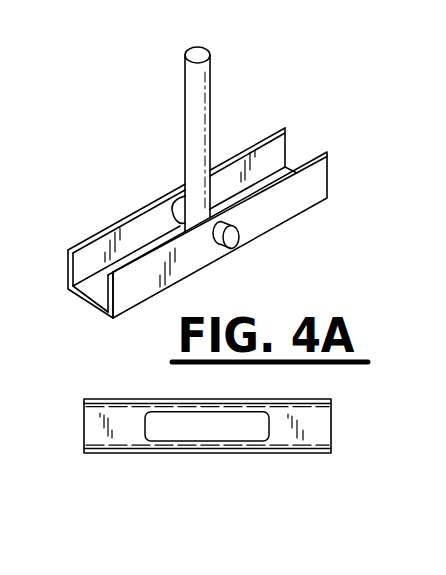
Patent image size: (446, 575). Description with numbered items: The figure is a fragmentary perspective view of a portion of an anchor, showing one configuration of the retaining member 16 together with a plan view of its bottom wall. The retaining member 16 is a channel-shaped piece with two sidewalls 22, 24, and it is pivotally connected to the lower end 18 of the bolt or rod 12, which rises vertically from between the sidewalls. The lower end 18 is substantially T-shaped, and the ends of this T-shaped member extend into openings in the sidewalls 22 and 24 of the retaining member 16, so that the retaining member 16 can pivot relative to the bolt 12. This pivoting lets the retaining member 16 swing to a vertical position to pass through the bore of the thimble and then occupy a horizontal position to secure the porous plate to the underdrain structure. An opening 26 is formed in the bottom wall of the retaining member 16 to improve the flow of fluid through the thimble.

The bolt 12 is at (187, 87).
The retaining member 16 is at (280, 92).
The lower end of the bolt 18 is at (175, 211).
The sidewall 22 is at (285, 197).
The sidewall 24 is at (102, 230).
The opening 26 is at (177, 420).